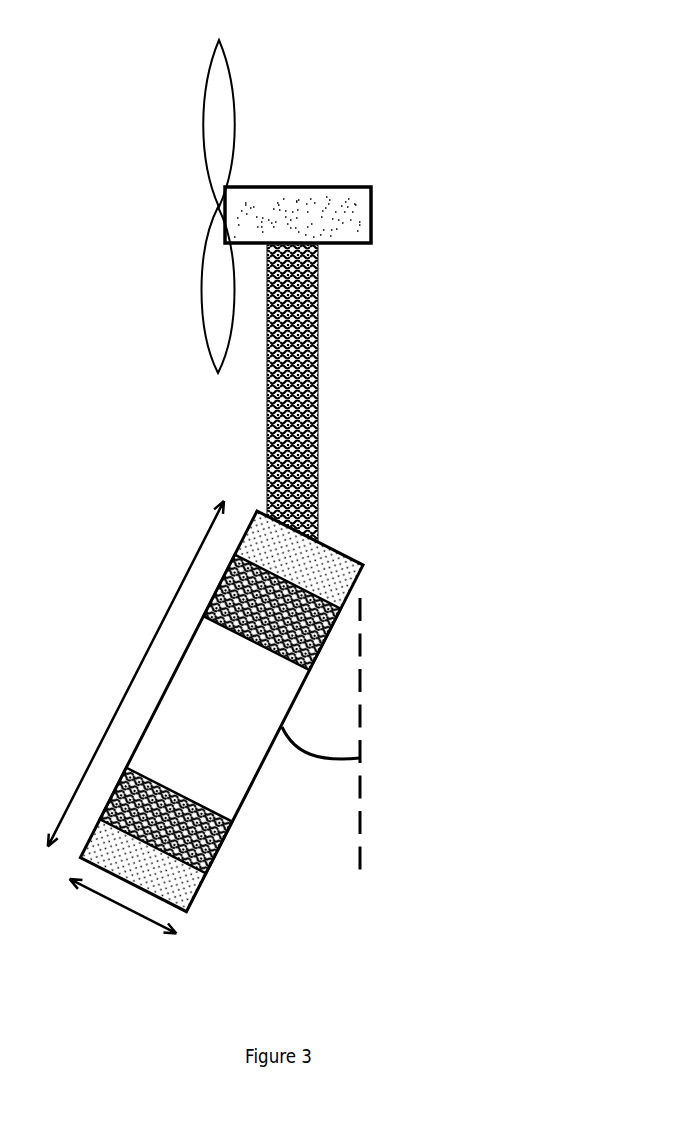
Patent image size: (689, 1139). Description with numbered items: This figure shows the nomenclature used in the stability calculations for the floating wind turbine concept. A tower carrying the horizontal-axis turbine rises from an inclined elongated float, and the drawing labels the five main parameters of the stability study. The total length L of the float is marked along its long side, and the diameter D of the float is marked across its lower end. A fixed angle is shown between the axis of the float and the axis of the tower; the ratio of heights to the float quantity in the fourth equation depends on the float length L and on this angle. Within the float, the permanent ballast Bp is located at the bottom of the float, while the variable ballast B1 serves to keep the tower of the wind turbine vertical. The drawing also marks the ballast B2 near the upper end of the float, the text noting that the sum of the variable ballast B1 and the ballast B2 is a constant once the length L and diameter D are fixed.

The length of the float L is at (136, 674).
The diameter of the float D is at (122, 920).
The variable ballast B1 is at (167, 818).
The ballast B2 is at (271, 613).
The permanent ballast Bp is at (143, 865).